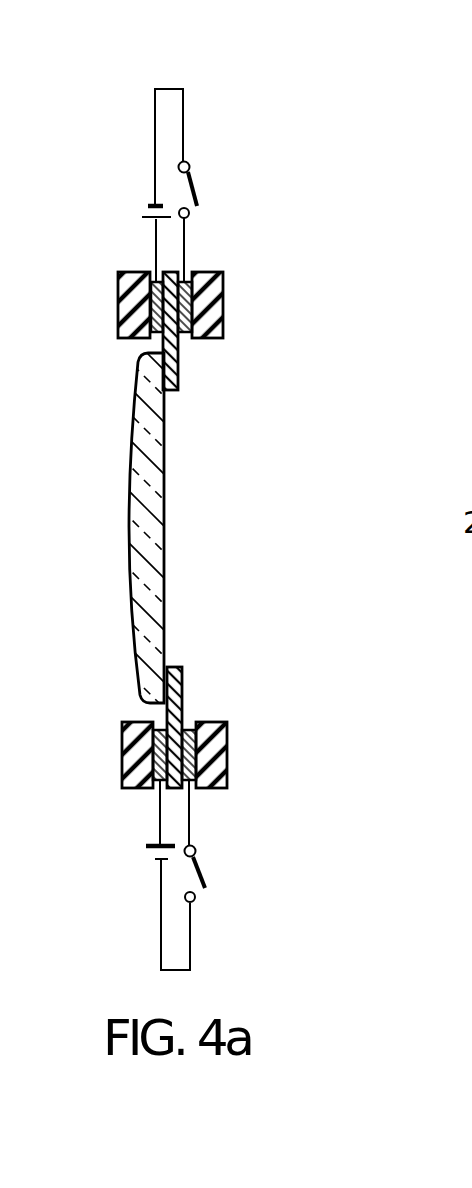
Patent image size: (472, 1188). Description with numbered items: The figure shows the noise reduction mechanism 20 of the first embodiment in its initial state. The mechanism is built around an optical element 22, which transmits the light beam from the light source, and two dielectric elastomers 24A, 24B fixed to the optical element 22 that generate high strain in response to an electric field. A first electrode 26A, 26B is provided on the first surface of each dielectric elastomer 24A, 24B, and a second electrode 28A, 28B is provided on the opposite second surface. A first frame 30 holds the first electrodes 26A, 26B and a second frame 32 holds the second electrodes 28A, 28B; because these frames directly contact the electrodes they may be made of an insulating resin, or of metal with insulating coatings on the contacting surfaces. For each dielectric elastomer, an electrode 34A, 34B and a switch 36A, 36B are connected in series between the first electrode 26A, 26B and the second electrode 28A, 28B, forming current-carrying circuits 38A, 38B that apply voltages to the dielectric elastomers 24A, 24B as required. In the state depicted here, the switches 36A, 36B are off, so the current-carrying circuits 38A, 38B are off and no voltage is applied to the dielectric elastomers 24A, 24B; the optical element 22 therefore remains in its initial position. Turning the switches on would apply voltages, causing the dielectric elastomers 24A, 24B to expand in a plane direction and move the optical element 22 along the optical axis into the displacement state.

The noise reduction mechanism 20 is at (176, 66).
The optical element 22 is at (129, 526).
The dielectric elastomer 24A is at (180, 364).
The dielectric elastomer 24B is at (183, 683).
The first electrode 26A is at (185, 274).
The first electrode 26B is at (189, 792).
The second electrode 28A is at (153, 274).
The second electrode 28B is at (160, 792).
The first frame 30 is at (223, 305).
The second frame 32 is at (118, 304).
The electrode 34A is at (147, 212).
The electrode 34B is at (147, 859).
The switch 36A is at (228, 180).
The switch 36B is at (202, 896).
The current-carrying circuit 38A is at (134, 115).
The current-carrying circuit 38B is at (134, 939).